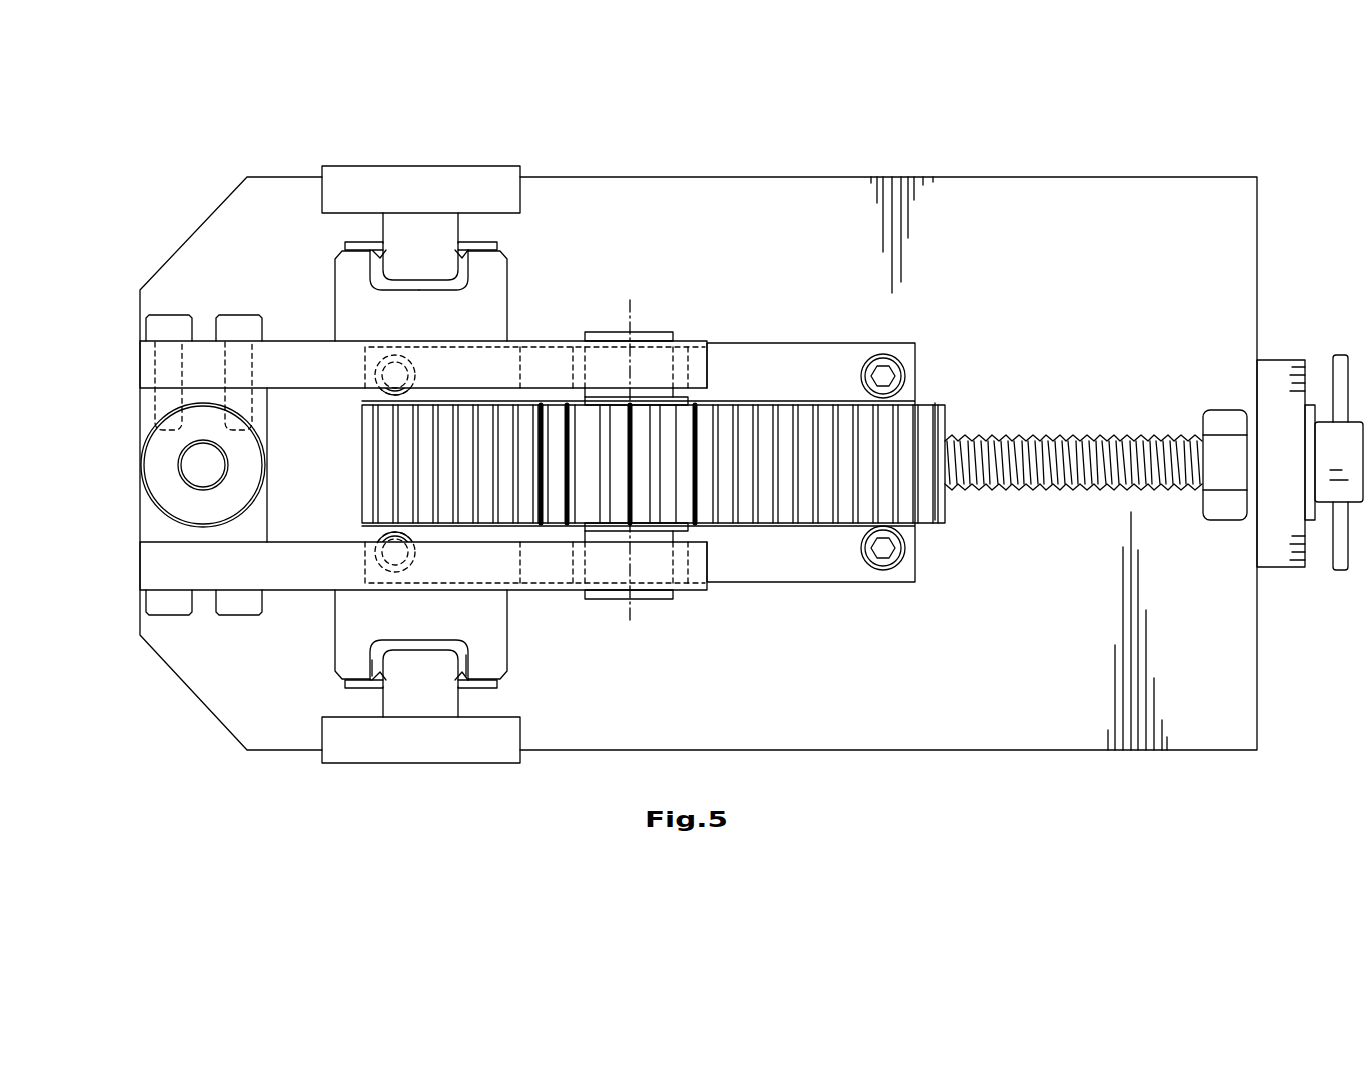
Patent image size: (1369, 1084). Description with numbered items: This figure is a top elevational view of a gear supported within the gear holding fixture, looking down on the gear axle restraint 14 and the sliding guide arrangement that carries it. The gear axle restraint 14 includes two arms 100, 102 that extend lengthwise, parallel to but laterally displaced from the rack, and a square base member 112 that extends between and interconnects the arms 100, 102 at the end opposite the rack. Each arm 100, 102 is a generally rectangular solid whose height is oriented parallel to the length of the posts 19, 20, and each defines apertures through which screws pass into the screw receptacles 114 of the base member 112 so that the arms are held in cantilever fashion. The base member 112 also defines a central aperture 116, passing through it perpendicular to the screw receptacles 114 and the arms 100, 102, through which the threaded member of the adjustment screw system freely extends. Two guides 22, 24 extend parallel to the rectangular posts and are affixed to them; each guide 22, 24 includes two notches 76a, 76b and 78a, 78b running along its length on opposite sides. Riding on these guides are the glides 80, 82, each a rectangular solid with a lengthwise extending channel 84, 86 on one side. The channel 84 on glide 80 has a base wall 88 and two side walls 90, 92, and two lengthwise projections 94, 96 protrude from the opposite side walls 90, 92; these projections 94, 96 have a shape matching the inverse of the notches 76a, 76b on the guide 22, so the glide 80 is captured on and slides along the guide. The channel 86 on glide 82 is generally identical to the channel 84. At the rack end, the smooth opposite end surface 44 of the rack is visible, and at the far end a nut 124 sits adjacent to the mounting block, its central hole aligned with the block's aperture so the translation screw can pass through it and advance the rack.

The gear axle restraint 14 is at (245, 258).
The post 19 is at (422, 763).
The rectangular post 20 is at (404, 167).
The guide 22 is at (448, 718).
The guide 24 is at (442, 290).
The opposite end surface 44 is at (362, 508).
The notch 76a is at (360, 687).
The notch 76b is at (487, 687).
The notch 78a is at (380, 258).
The notch 78b is at (462, 264).
The glide 80 is at (505, 665).
The glide 82 is at (507, 292).
The channel 84 is at (440, 652).
The channel 86 is at (447, 247).
The base wall 88 is at (402, 642).
The side wall 90 is at (373, 663).
The side wall 92 is at (470, 650).
The lengthwise projection 94 is at (373, 677).
The lengthwise projection 96 is at (477, 687).
The arm 100 is at (187, 577).
The arm 102 is at (203, 368).
The base member 112 is at (148, 525).
The screw receptacle 114 is at (153, 405).
The central aperture 116 is at (190, 470).
The nut 124 is at (1225, 410).